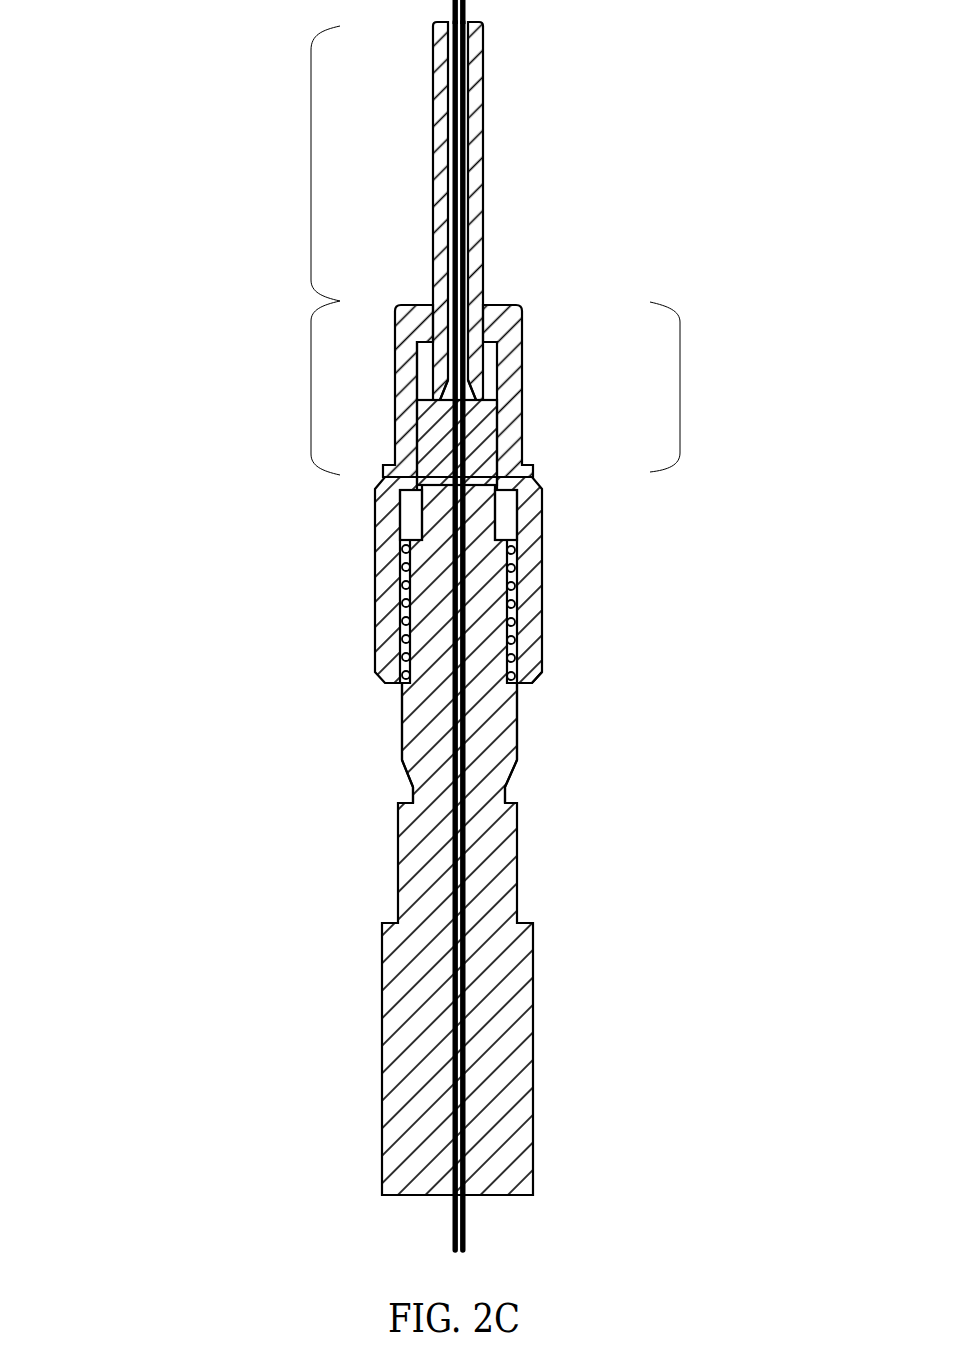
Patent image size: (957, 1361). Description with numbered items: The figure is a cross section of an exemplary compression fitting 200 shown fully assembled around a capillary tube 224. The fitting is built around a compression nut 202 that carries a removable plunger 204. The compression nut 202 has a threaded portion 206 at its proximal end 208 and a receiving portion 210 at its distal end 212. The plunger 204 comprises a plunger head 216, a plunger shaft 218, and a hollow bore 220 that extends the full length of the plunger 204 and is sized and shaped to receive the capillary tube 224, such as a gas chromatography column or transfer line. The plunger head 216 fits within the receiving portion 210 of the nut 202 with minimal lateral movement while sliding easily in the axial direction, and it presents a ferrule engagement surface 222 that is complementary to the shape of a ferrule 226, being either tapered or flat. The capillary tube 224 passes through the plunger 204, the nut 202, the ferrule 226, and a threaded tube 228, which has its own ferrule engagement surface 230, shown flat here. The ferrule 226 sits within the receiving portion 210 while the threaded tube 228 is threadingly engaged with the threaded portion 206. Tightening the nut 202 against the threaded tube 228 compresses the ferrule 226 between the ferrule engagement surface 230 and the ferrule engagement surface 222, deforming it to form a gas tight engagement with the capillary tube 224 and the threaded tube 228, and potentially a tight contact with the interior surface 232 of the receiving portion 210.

The compression fitting 200 is at (138, 50).
The compression nut 202 is at (425, 840).
The plunger 204 is at (485, 238).
The threaded portion 206 is at (568, 609).
The proximal end 208 is at (581, 709).
The receiving portion 210 is at (680, 390).
The distal end 212 is at (515, 300).
The plunger head 216 is at (311, 391).
The plunger shaft 218 is at (311, 167).
The hollow bore 220 is at (485, 120).
The ferrule engagement surface 222 is at (425, 398).
The capillary tube 224 is at (466, 12).
The ferrule 226 is at (420, 465).
The threaded tube 228 is at (505, 745).
The ferrule engagement surface 230 is at (412, 496).
The interior surface 232 is at (499, 435).